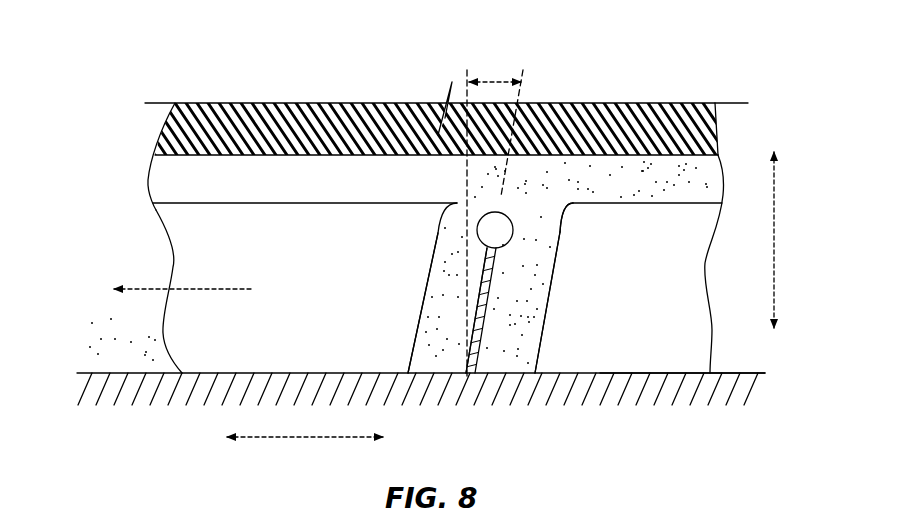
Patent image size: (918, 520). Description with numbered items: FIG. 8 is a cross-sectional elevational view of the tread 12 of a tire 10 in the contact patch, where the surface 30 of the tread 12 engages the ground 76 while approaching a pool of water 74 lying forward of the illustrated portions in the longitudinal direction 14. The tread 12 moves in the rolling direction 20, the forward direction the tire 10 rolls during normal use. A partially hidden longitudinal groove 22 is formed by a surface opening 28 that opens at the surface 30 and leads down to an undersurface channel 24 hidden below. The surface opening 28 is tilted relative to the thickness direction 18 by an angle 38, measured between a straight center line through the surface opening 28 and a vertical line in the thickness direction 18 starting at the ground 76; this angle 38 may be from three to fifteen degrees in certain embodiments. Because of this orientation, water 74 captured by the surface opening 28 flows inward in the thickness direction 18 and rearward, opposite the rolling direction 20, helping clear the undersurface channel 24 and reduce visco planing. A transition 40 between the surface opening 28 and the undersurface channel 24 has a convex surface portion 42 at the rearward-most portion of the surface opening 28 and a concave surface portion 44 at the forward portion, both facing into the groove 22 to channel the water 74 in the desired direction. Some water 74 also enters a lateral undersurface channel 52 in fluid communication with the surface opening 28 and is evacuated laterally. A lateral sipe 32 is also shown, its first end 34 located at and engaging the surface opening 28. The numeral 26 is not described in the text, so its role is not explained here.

The tire 10 is at (146, 45).
The tread 12 is at (680, 120).
The longitudinal direction 14 is at (310, 440).
The thickness direction 18 is at (775, 248).
The rolling direction 20 is at (143, 289).
The partially hidden longitudinal groove 22 is at (210, 168).
The undersurface channel 24 is at (283, 168).
The body 26 is at (680, 288).
The surface opening 28 is at (530, 305).
The surface 30 is at (210, 383).
The lateral sipe 32 is at (493, 262).
The first end 34 is at (482, 322).
The angle 38 is at (492, 82).
The transition 40 is at (573, 207).
The convex surface portion 42 is at (570, 202).
The concave surface portion 44 is at (447, 226).
The lateral undersurface channel 52 is at (490, 222).
The water 74 is at (600, 165).
The ground 76 is at (735, 373).